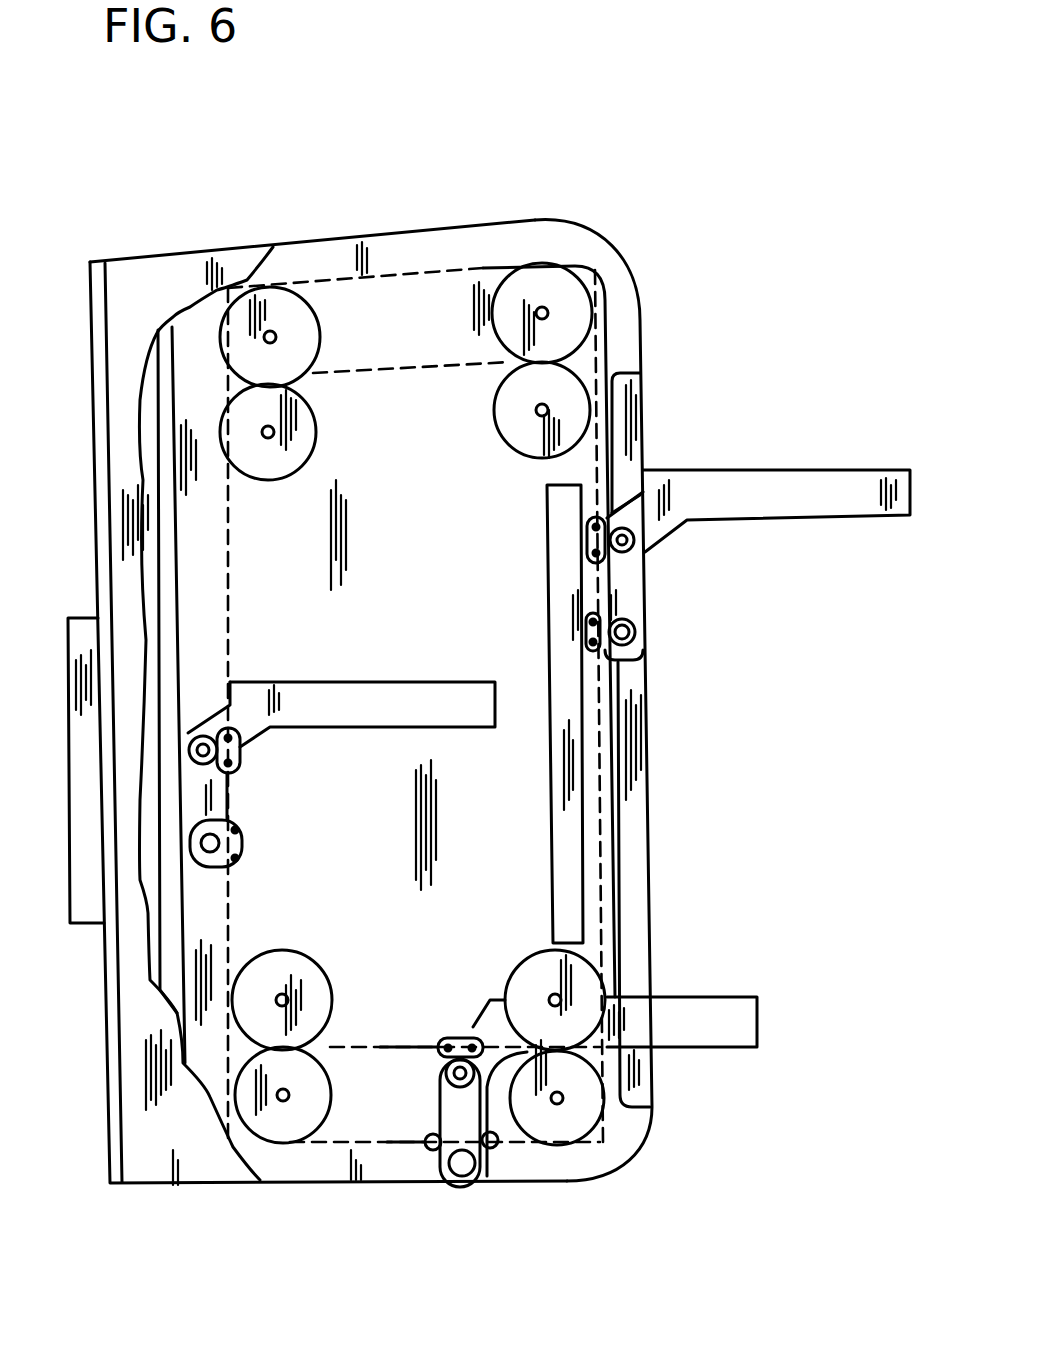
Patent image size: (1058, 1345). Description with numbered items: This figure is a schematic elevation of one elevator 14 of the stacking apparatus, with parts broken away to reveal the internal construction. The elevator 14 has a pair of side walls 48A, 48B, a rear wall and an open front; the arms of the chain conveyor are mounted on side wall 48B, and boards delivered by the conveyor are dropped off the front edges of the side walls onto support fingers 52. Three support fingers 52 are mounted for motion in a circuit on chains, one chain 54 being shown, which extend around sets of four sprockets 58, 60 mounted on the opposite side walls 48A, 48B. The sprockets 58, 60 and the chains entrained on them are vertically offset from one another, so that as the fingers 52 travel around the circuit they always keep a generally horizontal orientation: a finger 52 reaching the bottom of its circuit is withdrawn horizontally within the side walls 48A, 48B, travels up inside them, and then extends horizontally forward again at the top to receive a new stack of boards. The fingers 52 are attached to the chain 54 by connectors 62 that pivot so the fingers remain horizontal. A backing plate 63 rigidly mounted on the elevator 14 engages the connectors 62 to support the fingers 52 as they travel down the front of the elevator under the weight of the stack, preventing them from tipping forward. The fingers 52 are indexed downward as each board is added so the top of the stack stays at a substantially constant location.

The elevator 14 is at (218, 242).
The side wall 48A is at (170, 1153).
The side wall 48B is at (430, 491).
The support finger 52 is at (823, 487).
The chain 54 is at (405, 272).
The sprocket 58 is at (295, 307).
The sprocket 60 is at (272, 466).
The connector 62 is at (580, 536).
The backing plate 63 is at (563, 607).